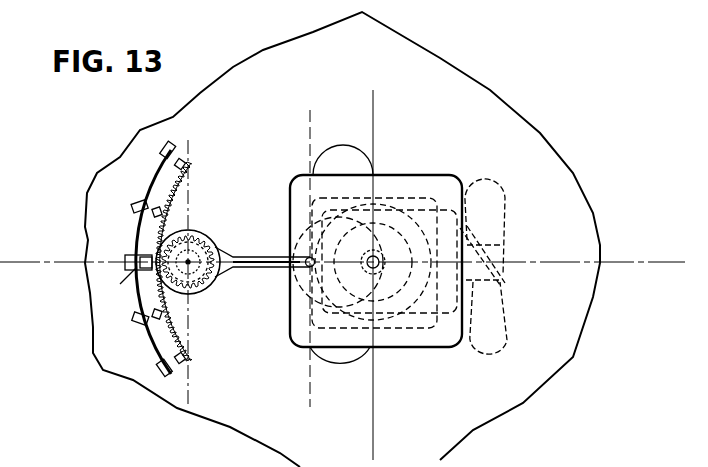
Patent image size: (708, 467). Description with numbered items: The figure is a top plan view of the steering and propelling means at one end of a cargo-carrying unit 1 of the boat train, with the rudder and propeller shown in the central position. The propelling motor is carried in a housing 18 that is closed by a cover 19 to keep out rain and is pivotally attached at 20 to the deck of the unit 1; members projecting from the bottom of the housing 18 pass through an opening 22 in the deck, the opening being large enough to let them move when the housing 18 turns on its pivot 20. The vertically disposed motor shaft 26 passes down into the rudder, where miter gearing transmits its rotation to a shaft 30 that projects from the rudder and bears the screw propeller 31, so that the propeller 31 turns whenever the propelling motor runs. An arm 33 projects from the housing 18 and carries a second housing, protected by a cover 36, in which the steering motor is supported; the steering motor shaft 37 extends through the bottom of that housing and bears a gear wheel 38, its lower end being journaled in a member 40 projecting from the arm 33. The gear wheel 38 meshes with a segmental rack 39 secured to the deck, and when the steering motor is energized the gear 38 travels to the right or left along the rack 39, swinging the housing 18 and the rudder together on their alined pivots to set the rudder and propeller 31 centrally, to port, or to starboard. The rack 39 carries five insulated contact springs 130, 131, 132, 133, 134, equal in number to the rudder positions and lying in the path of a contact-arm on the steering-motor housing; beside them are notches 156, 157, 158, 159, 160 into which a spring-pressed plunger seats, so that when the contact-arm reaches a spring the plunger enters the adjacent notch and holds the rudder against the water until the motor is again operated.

The cargo-carrying unit 1 is at (342, 239).
The housing 18 is at (407, 328).
The cover 19 is at (394, 176).
The pivot 20 is at (308, 258).
The opening 22 is at (341, 165).
The shaft 26 is at (368, 270).
The shaft 30 is at (420, 250).
The screw propeller 31 is at (503, 312).
The arm 33 is at (265, 242).
The cover 36 is at (195, 297).
The shaft 37 is at (204, 248).
The gear wheel 38 is at (191, 260).
The segmental rack 39 is at (180, 333).
The member 40 is at (196, 278).
The contact spring 130 is at (163, 372).
The contact spring 131 is at (138, 320).
The contact spring 132 is at (128, 265).
The contact spring 133 is at (136, 204).
The contact spring 134 is at (166, 150).
The notch 156 is at (181, 362).
The notch 157 is at (157, 318).
The notch 158 is at (117, 291).
The notch 159 is at (155, 214).
The notch 160 is at (177, 165).